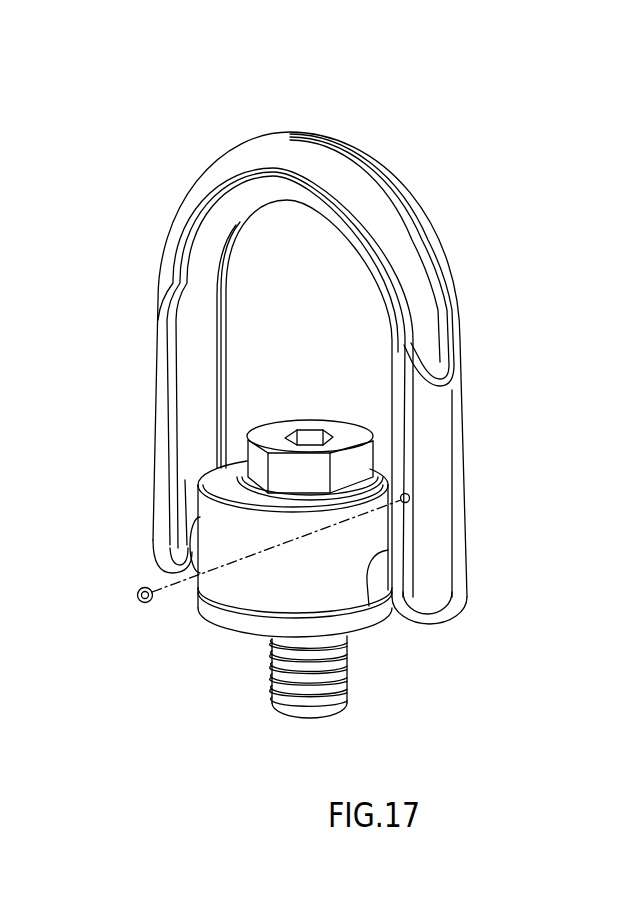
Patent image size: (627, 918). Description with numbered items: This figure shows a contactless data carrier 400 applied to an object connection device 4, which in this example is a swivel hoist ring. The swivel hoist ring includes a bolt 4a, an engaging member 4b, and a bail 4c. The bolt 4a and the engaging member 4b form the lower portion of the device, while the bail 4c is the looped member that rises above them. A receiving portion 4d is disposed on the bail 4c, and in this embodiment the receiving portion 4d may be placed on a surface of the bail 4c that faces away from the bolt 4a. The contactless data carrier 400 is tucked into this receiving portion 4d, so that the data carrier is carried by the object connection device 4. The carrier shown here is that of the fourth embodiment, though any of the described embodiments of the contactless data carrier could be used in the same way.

The object connection device 4 is at (158, 232).
The bolt 4a is at (313, 429).
The engaging member 4b is at (338, 588).
The bail 4c is at (410, 258).
The receiving portion 4d is at (409, 494).
The contactless data carrier 400 is at (142, 602).